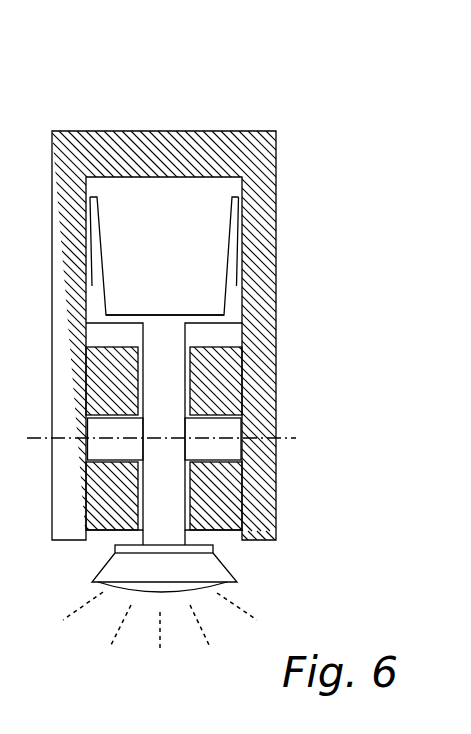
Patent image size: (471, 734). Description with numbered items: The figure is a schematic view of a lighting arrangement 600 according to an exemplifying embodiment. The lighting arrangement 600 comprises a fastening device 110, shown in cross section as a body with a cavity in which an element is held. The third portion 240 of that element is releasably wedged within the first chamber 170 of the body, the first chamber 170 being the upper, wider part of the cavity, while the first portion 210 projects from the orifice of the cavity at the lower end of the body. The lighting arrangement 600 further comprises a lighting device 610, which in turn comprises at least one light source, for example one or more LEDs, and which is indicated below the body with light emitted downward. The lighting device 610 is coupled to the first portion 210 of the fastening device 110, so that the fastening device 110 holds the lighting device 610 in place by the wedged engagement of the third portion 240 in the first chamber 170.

The lighting arrangement 600 is at (212, 88).
The fastening device 110 is at (300, 170).
The first chamber 170 is at (205, 193).
The third portion 240 is at (167, 312).
The first portion 210 is at (200, 545).
The lighting device 610 is at (110, 610).